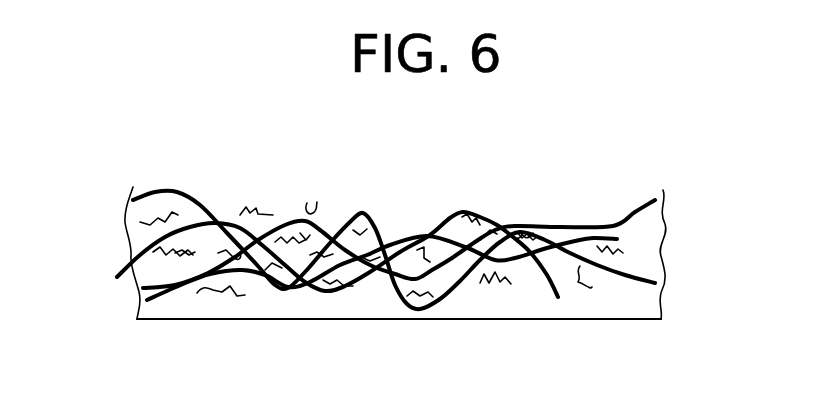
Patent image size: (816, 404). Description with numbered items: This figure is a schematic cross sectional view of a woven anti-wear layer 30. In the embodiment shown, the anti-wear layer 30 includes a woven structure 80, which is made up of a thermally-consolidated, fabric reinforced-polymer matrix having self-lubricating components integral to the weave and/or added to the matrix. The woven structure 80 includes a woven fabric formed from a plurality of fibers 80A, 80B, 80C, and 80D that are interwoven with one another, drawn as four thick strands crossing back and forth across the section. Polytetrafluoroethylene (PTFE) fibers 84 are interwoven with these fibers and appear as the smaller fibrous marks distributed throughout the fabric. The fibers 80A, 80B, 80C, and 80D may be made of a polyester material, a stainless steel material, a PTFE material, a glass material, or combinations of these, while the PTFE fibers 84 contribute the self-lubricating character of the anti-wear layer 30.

The anti-wear layer 30 is at (660, 98).
The woven structure 80 is at (387, 265).
The fiber 80A is at (592, 228).
The fiber 80B is at (618, 238).
The fiber 80C is at (625, 273).
The fiber 80D is at (559, 297).
The polytetrafluoroethylene (PTFE) fibers 84 is at (170, 212).